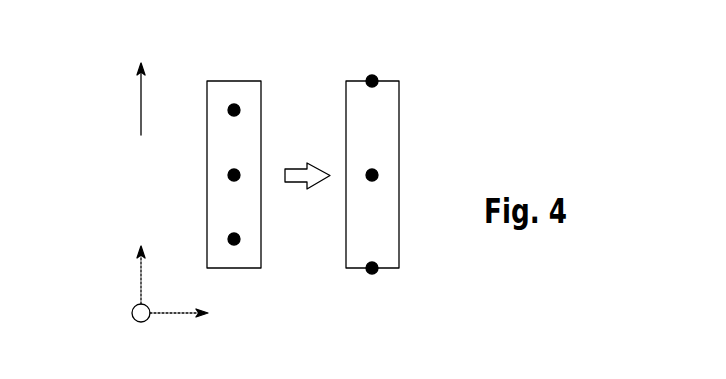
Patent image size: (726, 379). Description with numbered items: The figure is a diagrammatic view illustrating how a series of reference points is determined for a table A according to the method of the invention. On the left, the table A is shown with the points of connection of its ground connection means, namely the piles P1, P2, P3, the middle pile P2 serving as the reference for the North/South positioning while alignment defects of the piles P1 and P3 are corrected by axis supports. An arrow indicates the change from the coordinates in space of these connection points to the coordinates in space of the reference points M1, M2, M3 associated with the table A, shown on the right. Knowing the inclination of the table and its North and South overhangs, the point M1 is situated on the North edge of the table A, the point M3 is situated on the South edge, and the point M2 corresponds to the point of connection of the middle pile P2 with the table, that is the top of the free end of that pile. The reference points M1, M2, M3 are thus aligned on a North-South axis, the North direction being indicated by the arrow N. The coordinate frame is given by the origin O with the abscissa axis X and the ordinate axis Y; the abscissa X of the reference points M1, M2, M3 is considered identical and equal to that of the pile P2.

The table A is at (257, 112).
The pile P1 is at (228, 110).
The middle pile P2 is at (228, 175).
The pile P3 is at (234, 234).
The reference point M1 is at (375, 77).
The reference point M2 is at (378, 174).
The reference point M3 is at (375, 263).
The North direction N is at (141, 85).
The origin O is at (130, 316).
The abscissa axis X is at (187, 316).
The ordinate axis Y is at (140, 262).